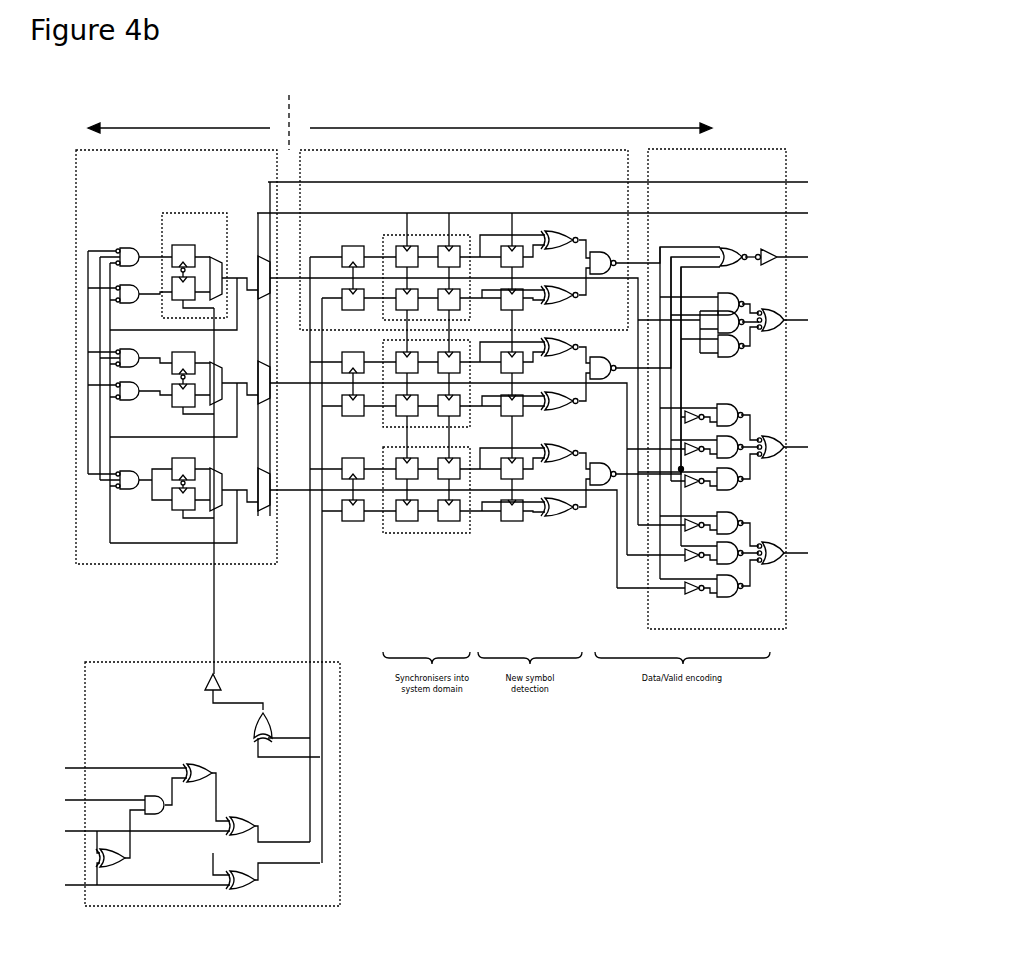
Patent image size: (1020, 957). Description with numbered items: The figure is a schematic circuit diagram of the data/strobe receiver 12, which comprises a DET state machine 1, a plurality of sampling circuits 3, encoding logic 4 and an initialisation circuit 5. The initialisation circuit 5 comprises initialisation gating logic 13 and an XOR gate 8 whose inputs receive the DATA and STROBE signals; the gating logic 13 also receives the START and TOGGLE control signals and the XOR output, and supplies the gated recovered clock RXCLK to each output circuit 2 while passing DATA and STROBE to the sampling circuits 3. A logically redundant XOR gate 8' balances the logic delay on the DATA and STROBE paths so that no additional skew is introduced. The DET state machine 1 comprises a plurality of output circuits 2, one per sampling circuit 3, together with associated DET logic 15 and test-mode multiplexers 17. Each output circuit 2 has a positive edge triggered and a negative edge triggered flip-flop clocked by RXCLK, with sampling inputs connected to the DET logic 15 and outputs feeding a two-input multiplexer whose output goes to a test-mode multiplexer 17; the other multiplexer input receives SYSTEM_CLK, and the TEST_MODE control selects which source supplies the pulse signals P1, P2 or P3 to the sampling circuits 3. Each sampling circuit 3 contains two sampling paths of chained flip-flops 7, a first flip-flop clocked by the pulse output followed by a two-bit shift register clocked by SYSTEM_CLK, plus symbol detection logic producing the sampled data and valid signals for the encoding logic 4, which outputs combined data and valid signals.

The DET state machine 1 is at (176, 412).
The output circuit 2 is at (184, 271).
The sampling circuit 3 is at (557, 506).
The encoding logic 4 is at (738, 389).
The initialisation circuit 5 is at (186, 784).
The flip-flops 7 is at (408, 519).
The XOR gate 8 is at (117, 858).
The XOR gate 8' is at (263, 893).
The data/strobe receiver 12 is at (104, 101).
The initialisation gating logic 13 is at (184, 732).
The DET logic 15 is at (236, 208).
The test-mode multiplexer 17 is at (258, 263).